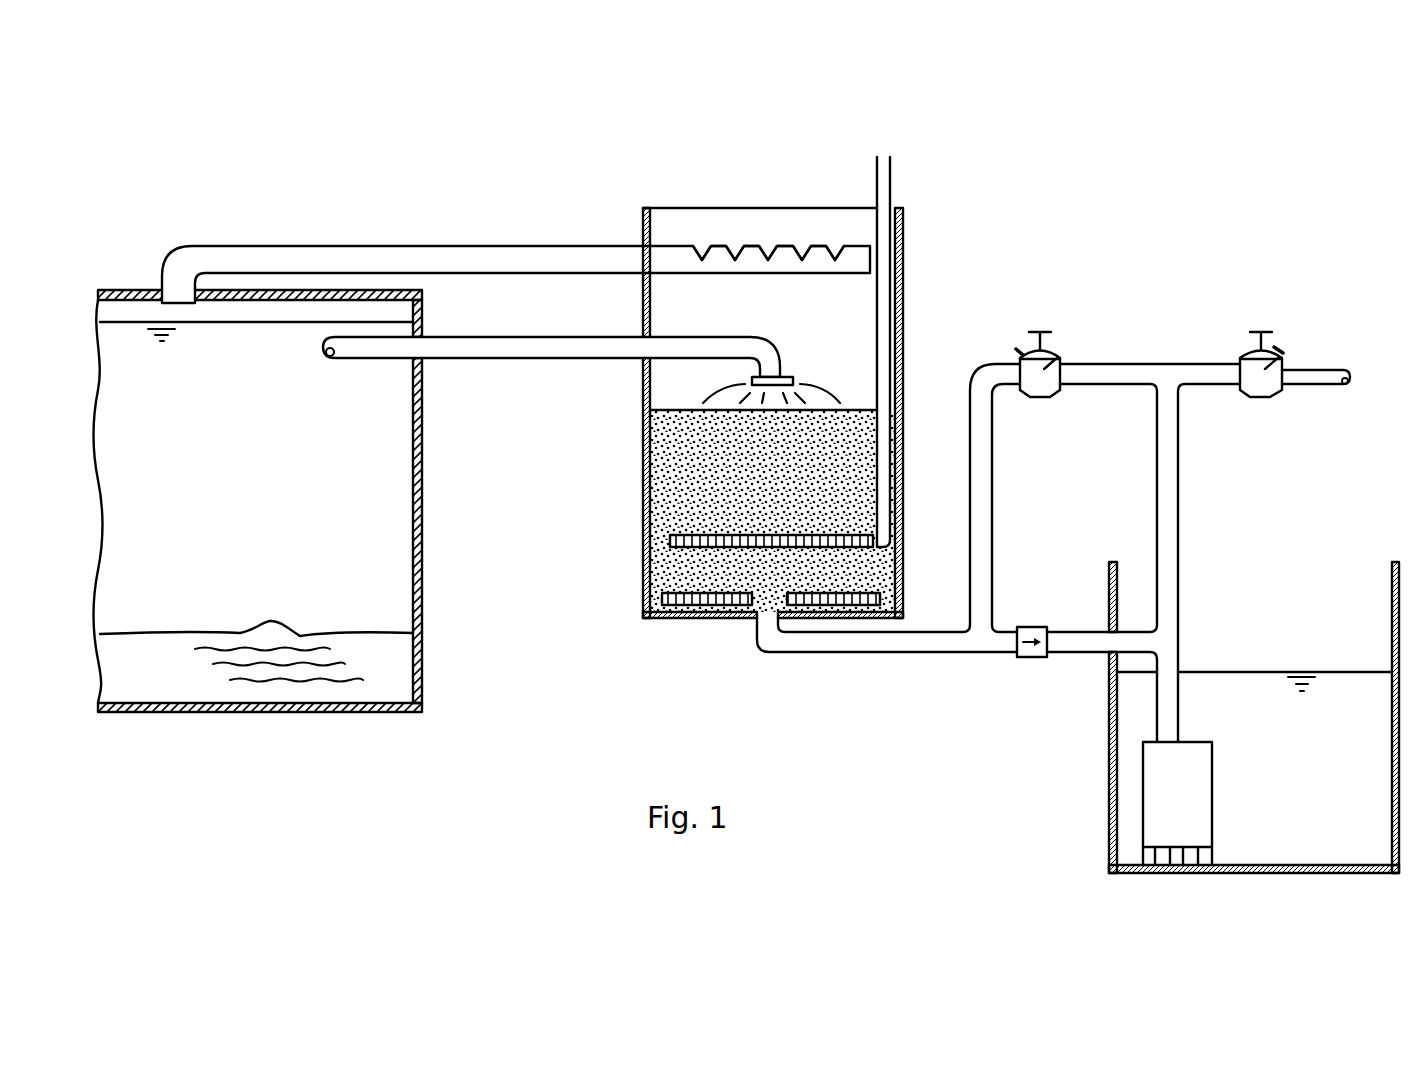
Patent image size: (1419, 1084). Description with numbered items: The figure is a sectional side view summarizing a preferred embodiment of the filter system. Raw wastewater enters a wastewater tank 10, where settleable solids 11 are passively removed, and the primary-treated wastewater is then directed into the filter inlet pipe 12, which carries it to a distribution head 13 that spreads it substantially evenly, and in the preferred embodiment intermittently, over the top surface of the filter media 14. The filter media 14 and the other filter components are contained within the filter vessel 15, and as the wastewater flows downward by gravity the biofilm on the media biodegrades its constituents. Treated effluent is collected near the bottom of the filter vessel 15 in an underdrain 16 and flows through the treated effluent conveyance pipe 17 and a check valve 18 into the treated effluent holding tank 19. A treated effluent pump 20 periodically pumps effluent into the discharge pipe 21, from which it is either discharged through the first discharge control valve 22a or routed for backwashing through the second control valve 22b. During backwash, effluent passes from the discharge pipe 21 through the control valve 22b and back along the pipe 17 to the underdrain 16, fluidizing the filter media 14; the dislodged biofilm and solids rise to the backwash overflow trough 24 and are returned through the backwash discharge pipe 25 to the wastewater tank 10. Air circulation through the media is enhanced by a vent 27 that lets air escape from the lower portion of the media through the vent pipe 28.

The wastewater tank 10 is at (422, 620).
The settleable solids 11 is at (265, 632).
The filter inlet pipe 12 is at (350, 355).
The distribution head 13 is at (782, 370).
The filter media 14 is at (850, 410).
The filter vessel 15 is at (643, 390).
The underdrain 16 is at (692, 620).
The treated effluent conveyance pipe 17 is at (900, 652).
The check valve 18 is at (1020, 658).
The treated effluent holding tank 19 is at (1109, 755).
The treated effluent pump 20 is at (1212, 790).
The discharge pipe 21 is at (1178, 475).
The first discharge control valve 22a is at (1284, 360).
The second control valve 22b is at (1065, 357).
The backwash overflow trough 24 is at (714, 252).
The backwash discharge pipe 25 is at (186, 250).
The vent 27 is at (648, 536).
The vent pipe 28 is at (891, 175).